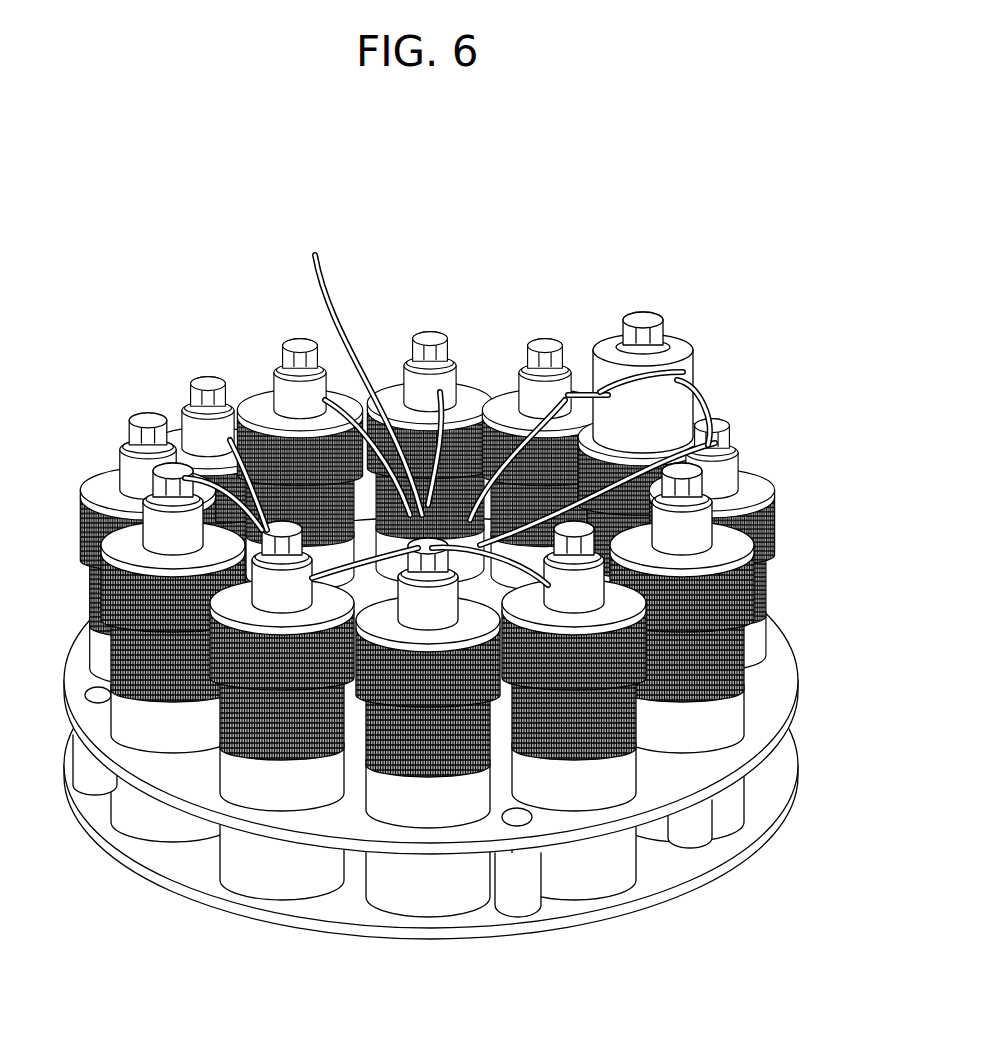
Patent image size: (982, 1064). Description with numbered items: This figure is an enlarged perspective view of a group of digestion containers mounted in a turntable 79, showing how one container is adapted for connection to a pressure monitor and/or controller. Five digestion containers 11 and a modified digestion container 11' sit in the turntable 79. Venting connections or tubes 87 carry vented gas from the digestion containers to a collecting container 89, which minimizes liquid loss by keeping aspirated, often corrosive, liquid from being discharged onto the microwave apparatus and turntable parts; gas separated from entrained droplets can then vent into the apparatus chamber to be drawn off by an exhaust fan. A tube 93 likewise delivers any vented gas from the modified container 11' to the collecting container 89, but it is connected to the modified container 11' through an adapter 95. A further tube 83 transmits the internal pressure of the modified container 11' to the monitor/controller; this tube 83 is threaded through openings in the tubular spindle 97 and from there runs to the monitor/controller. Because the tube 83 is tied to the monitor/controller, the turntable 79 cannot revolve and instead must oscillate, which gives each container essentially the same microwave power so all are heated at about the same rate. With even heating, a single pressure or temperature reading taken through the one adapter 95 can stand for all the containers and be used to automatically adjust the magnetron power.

The digestion container 11 is at (725, 608).
The modified digestion container 11' is at (665, 468).
The turntable 79 is at (663, 815).
The tube 83 is at (716, 442).
The venting connections or tubes 87 is at (465, 607).
The collecting container 89 is at (547, 577).
The tube 93 is at (694, 412).
The adapter 95 is at (686, 372).
The tubular spindle 97 is at (318, 588).